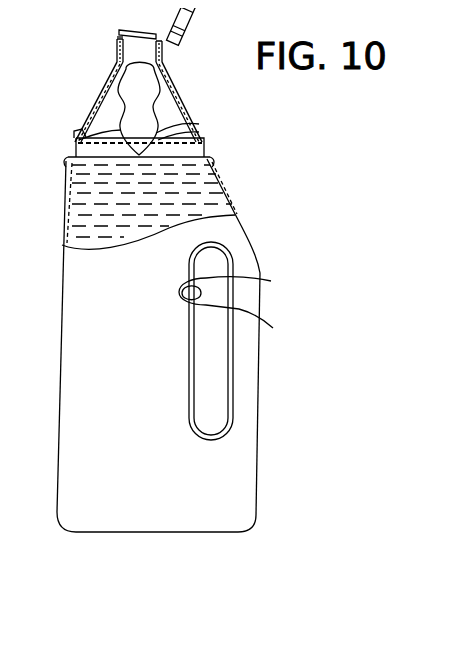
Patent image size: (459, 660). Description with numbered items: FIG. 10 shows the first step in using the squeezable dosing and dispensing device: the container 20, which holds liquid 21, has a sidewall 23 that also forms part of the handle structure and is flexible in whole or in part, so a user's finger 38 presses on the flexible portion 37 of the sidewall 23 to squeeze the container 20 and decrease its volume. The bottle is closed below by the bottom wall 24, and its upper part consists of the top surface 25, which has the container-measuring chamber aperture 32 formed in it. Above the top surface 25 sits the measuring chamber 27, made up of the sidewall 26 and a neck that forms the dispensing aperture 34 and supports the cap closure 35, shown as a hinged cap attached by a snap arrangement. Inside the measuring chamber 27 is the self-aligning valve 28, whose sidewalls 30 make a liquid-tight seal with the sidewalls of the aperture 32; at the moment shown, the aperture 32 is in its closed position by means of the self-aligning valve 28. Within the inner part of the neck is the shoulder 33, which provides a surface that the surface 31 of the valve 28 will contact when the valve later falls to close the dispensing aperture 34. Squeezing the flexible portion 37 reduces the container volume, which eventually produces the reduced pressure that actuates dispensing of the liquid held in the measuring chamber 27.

The container 20 is at (230, 196).
The liquid 21 is at (97, 195).
The sidewall 23 is at (256, 432).
The bottom wall 24 is at (223, 536).
The top surface 25 is at (77, 133).
The sidewall 26 is at (175, 84).
The measuring chamber 27 is at (167, 112).
The self-aligning valve 28 is at (138, 106).
The sidewalls 30 is at (172, 130).
The surface 31 is at (114, 80).
The aperture 32 is at (202, 138).
The shoulder 33 is at (120, 62).
The dispensing aperture 34 is at (142, 52).
The cap closure 35 is at (188, 26).
The flexible portion 37 is at (215, 360).
The finger 38 is at (248, 296).